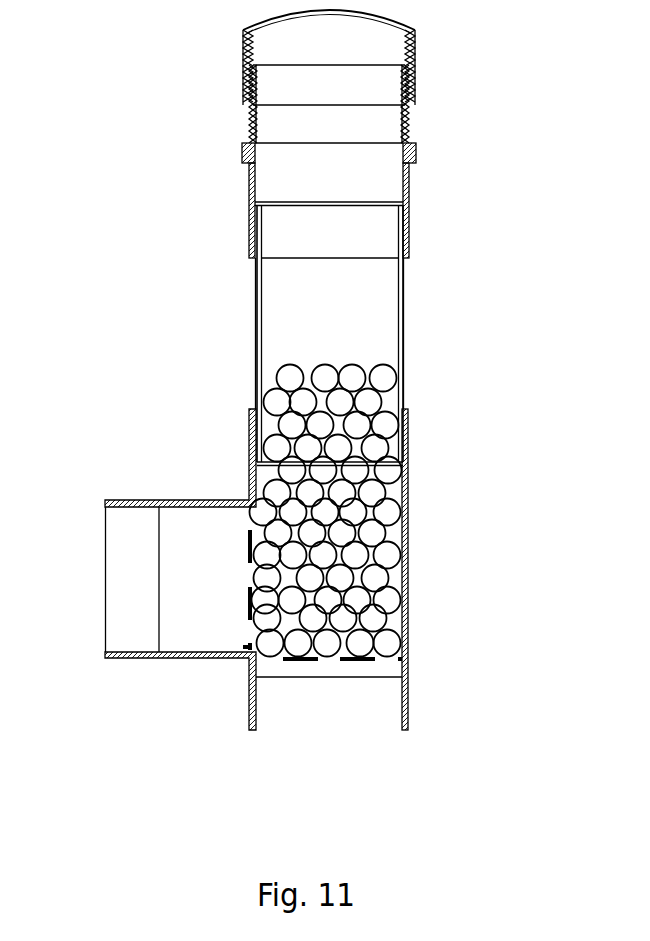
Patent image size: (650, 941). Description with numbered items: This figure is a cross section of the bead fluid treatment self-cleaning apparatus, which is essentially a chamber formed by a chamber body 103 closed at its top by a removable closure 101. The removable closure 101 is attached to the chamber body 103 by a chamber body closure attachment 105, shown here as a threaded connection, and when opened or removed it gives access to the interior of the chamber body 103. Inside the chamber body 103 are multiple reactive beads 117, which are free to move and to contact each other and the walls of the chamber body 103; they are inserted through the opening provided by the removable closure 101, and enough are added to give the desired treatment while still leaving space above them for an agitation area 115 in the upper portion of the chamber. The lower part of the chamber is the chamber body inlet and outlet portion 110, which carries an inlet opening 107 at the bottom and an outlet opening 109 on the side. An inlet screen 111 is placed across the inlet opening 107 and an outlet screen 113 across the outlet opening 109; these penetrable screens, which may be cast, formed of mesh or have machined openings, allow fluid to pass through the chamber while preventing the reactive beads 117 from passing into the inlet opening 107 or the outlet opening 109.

The removable closure 101 is at (378, 9).
The chamber body closure attachment 105 is at (400, 117).
The chamber body 103 is at (256, 355).
The agitation area 115 is at (404, 333).
The chamber body inlet and outlet portion 110 is at (408, 565).
The outlet opening 109 is at (135, 550).
The outlet screen 113 is at (248, 545).
The inlet screen 111 is at (355, 660).
The inlet opening 107 is at (310, 717).
The reactive bead 117 is at (335, 487).